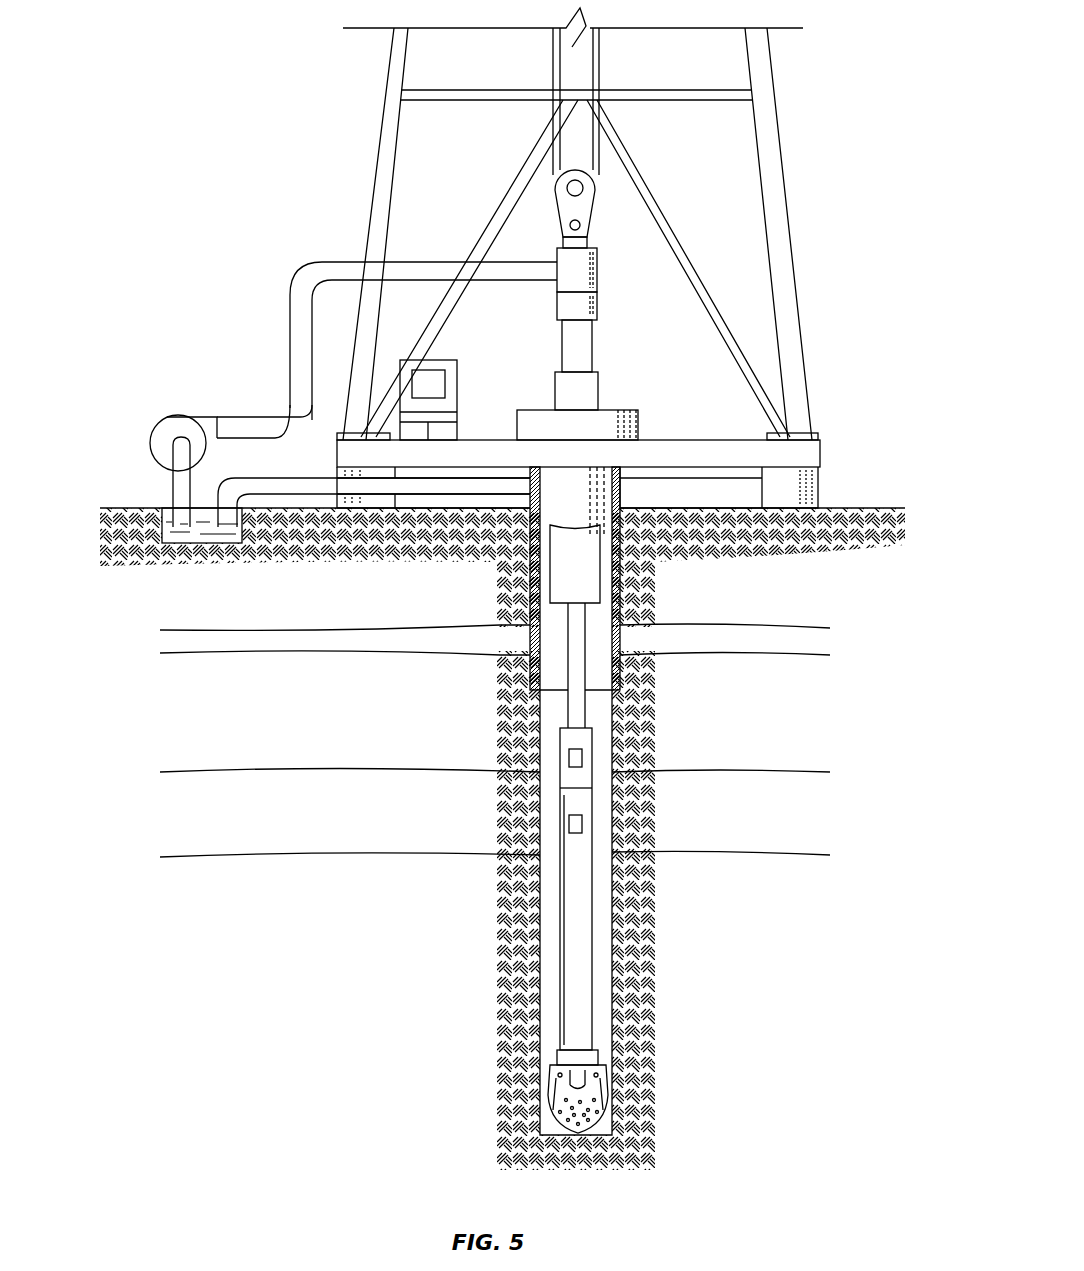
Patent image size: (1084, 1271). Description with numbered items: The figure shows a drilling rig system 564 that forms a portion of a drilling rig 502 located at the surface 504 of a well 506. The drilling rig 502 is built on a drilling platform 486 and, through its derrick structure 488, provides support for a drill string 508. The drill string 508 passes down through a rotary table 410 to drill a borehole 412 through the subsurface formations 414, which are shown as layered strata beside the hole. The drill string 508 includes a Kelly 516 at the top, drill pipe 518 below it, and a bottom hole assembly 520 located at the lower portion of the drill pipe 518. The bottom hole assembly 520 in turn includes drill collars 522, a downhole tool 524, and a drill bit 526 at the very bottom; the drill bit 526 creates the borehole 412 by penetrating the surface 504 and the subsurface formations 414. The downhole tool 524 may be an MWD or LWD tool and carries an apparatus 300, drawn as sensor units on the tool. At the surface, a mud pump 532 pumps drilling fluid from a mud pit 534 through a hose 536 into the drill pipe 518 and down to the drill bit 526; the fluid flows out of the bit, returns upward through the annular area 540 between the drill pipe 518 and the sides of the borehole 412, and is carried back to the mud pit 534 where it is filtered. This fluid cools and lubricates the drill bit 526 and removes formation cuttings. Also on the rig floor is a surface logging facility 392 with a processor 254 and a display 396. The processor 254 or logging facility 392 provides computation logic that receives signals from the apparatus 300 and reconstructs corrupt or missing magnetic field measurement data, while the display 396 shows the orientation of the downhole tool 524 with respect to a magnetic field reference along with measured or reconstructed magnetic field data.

The drilling rig system 564 is at (220, 150).
The derrick 488 is at (778, 122).
The drilling rig 502 is at (795, 196).
The Kelly 516 is at (597, 345).
The rotary table 410 is at (640, 421).
The drilling platform 486 is at (820, 447).
The surface 504 is at (845, 508).
The processor 254 is at (457, 375).
The display 396 is at (447, 392).
The surface logging facility 392 is at (438, 355).
The hose 536 is at (290, 327).
The mud pump 532 is at (178, 415).
The mud pit 534 is at (168, 520).
The well 506 is at (628, 502).
The drill collars 522 is at (600, 592).
The drill pipe 518 is at (585, 705).
The annular area 540 is at (604, 732).
The apparatus 300 is at (582, 758).
The downhole tool 524 is at (580, 806).
The drill string 508 is at (598, 868).
The borehole 412 is at (606, 938).
The drill bit 526 is at (600, 1092).
The subsurface formations 414 is at (142, 593).
The bottom hole assembly 520 is at (490, 690).